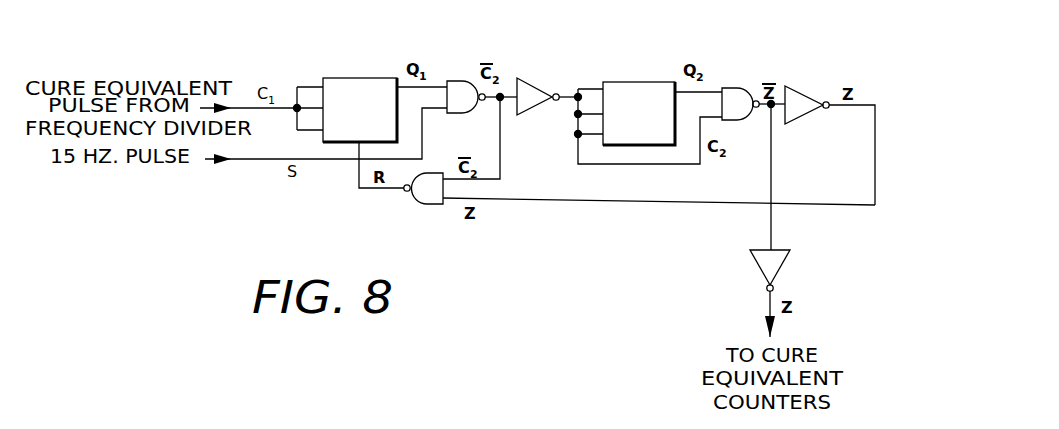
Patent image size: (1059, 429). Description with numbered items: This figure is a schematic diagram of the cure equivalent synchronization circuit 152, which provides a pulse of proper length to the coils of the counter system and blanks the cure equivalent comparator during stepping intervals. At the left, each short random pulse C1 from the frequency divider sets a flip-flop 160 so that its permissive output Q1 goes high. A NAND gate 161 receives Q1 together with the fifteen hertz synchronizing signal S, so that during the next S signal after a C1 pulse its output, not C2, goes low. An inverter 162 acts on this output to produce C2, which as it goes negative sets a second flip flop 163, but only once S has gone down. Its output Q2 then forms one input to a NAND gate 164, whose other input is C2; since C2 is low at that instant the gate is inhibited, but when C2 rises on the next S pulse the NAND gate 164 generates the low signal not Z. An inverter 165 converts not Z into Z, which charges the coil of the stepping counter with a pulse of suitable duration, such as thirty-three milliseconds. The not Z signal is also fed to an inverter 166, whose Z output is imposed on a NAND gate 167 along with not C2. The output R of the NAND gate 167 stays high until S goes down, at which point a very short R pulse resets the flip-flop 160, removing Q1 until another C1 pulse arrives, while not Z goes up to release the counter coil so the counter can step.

The synchronization circuit 152 is at (676, 216).
The flip-flop 160 is at (358, 78).
The NAND gate 161 is at (454, 81).
The inverter 162 is at (540, 78).
The second flip flop 163 is at (630, 82).
The NAND gate 164 is at (737, 88).
The inverter 165 is at (783, 263).
The inverter 166 is at (805, 96).
The NAND gate 167 is at (427, 205).